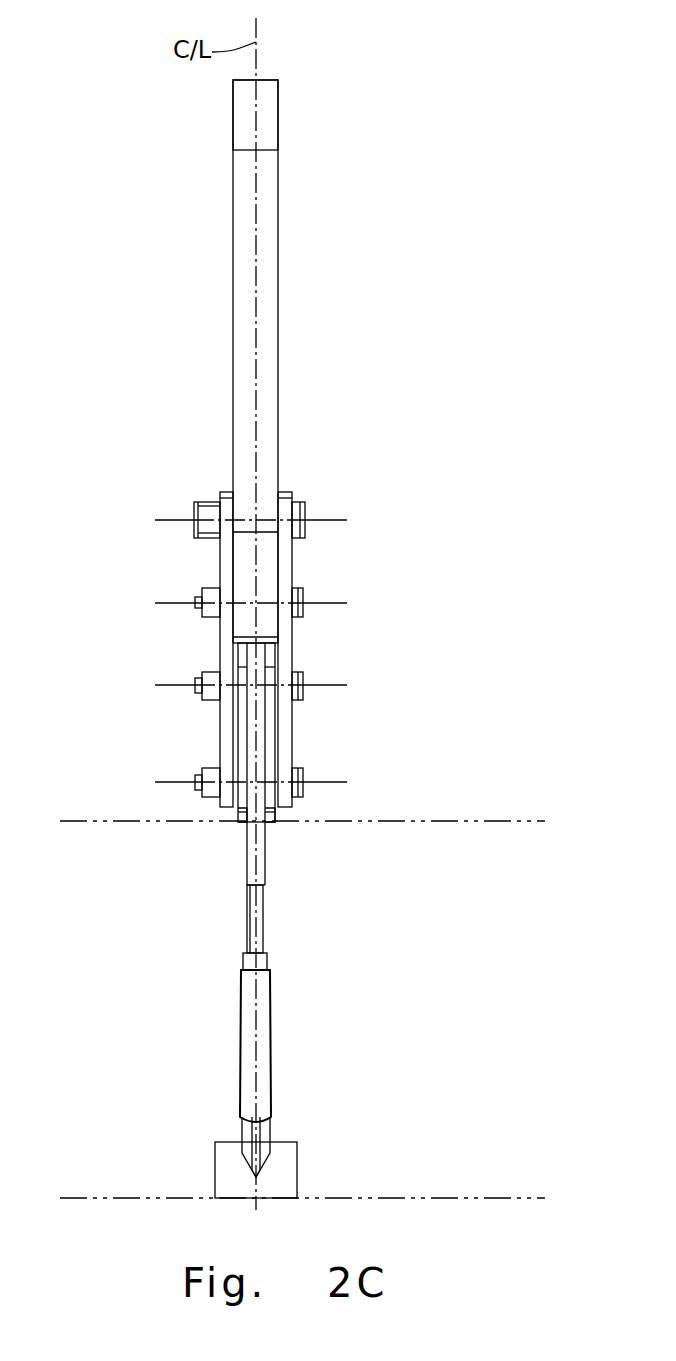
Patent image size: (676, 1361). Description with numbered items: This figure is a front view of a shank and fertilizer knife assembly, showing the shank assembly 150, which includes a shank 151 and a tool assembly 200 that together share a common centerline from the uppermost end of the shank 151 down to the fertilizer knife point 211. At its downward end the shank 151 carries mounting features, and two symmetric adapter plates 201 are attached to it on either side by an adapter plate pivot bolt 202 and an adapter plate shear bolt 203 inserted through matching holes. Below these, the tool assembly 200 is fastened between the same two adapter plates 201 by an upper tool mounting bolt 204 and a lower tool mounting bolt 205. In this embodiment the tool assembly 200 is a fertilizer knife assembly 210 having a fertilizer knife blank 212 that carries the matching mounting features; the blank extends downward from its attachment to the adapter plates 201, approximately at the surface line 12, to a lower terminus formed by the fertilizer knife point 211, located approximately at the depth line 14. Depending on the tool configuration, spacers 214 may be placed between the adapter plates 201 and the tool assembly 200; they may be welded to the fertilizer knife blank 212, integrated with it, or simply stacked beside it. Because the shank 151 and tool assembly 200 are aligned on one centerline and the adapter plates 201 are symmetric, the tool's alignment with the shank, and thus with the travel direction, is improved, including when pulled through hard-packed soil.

The surface line 12 is at (503, 821).
The depth line 14 is at (503, 1198).
The shank assembly 150 is at (278, 210).
The shank 151 is at (267, 80).
The tool assembly 200 is at (265, 897).
The adapter plates 201 is at (220, 572).
The adapter plate pivot bolt 202 is at (302, 517).
The adapter plate shear bolt 203 is at (303, 596).
The upper tool mounting bolt 204 is at (263, 678).
The lower tool mounting bolt 205 is at (263, 770).
The fertilizer knife assembly 210 is at (271, 1027).
The fertilizer knife point 211 is at (297, 1177).
The fertilizer knife blank 212 is at (247, 900).
The spacers 214 is at (242, 812).